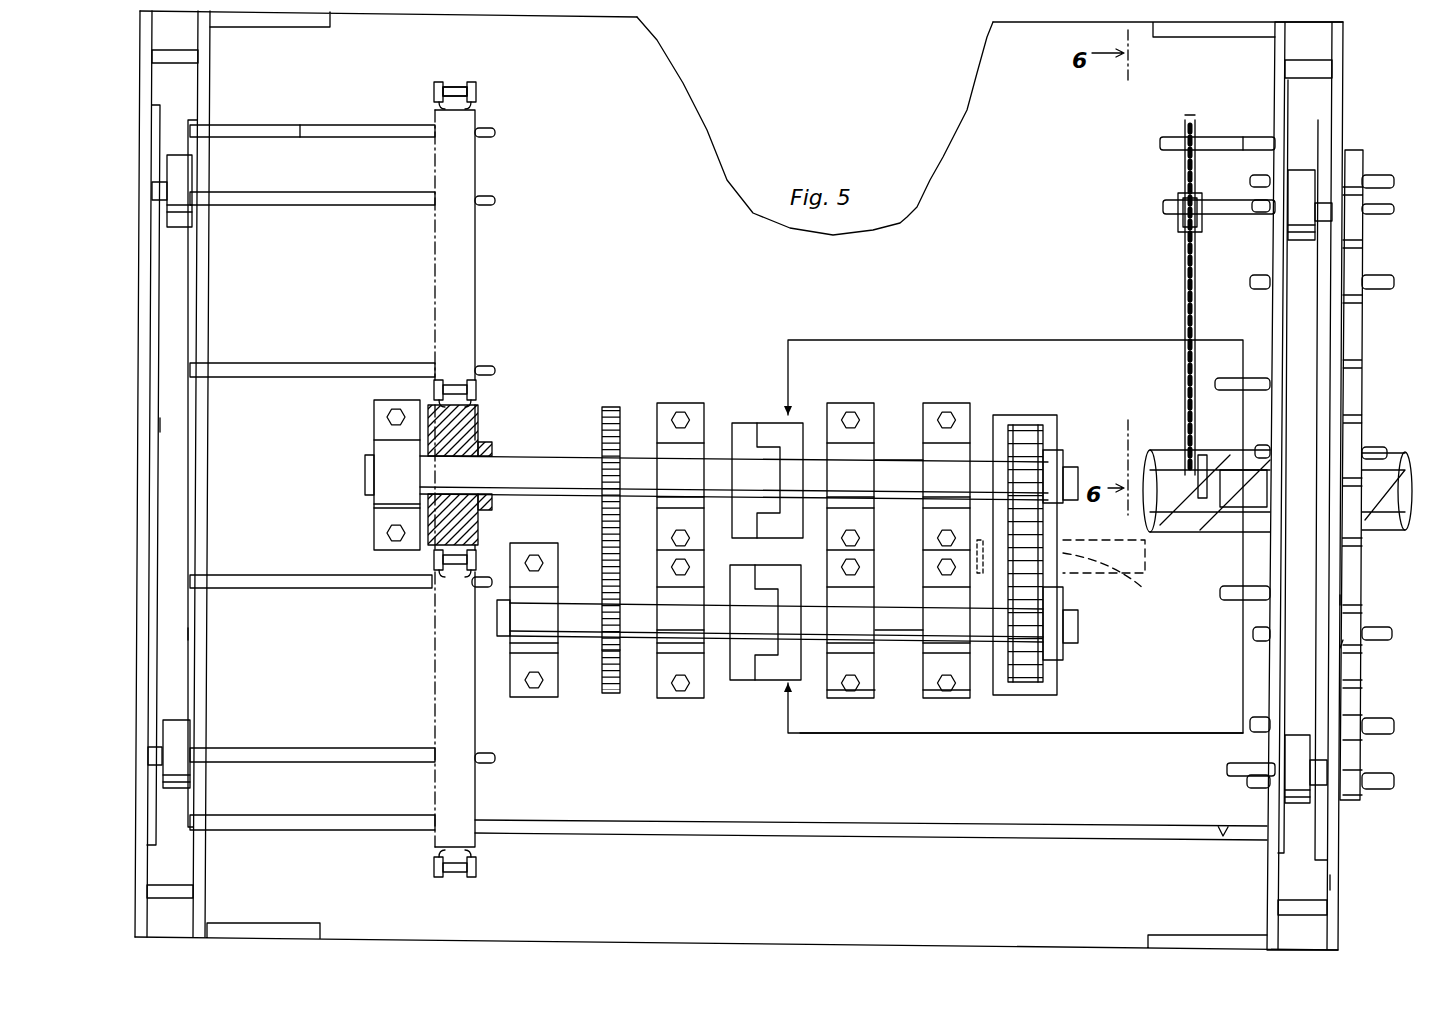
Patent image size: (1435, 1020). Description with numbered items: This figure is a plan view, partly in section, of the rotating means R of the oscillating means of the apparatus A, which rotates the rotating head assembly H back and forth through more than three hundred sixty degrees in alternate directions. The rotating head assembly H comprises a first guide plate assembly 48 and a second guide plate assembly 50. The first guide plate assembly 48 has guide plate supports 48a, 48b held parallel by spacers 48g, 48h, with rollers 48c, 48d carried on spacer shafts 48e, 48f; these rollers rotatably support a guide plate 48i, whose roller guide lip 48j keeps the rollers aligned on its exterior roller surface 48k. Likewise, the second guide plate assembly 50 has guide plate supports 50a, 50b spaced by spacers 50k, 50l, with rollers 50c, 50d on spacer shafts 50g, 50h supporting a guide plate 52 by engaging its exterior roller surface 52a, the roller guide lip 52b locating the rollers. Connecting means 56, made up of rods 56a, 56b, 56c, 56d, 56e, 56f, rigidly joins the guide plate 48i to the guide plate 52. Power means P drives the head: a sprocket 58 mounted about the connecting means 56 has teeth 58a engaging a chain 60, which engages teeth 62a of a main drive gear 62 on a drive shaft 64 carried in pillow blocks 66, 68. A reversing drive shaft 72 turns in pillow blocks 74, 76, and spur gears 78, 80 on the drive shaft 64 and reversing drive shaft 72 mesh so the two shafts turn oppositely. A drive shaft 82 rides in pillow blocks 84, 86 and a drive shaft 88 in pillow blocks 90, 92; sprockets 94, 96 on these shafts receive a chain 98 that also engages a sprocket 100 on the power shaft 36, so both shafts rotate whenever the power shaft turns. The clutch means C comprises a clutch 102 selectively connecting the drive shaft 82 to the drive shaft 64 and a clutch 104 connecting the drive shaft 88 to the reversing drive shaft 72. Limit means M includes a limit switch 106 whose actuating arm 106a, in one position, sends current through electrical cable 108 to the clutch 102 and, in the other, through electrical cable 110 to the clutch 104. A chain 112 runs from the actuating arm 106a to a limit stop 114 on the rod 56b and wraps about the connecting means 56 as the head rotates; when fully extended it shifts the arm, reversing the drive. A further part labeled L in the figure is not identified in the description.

The power shaft 36 is at (1148, 550).
The first guide plate assembly 48 is at (221, 256).
The guide plate support 48a is at (203, 302).
The guide plate support 48b is at (142, 328).
The head guide roller 48c is at (176, 724).
The head guide roller 48d is at (185, 170).
The spacer shaft 48e is at (152, 755).
The spacer shaft 48f is at (156, 190).
The spacer 48g is at (160, 888).
The spacer 48h is at (160, 57).
The guide plate 48i is at (182, 639).
The roller guide lip 48j is at (153, 288).
The exterior roller surface 48k is at (175, 432).
The second guide plate assembly 50 is at (1353, 863).
The guide plate support 50a is at (1270, 870).
The guide plate support 50b is at (1335, 884).
The head guide roller 50c is at (1290, 750).
The head guide roller 50d is at (1303, 178).
The spacer shaft 50g is at (1320, 770).
The spacer shaft 50h is at (1320, 218).
The spacer 50k is at (1290, 905).
The spacer 50l is at (1290, 70).
The guide plate 52 is at (1319, 631).
The exterior roller surface 52a is at (1300, 645).
The roller guide lip 52b is at (1318, 600).
The connecting means 56 is at (337, 114).
The rod 56a is at (306, 125).
The rod 56b is at (336, 192).
The rod 56c is at (310, 363).
The rod 56d is at (283, 575).
The rod 56e is at (305, 748).
The rod 56f is at (296, 815).
The sprocket 58 is at (478, 114).
The teeth 58a is at (458, 86).
The chain 60 is at (477, 252).
The main drive gear 62 is at (476, 420).
The teeth 62a is at (467, 382).
The drive shaft 64 is at (533, 456).
The pillow block 66 is at (385, 456).
The pillow block 68 is at (665, 456).
The reversing drive shaft 72 is at (580, 640).
The pillow block 74 is at (523, 638).
The pillow block 76 is at (662, 642).
The spur gear 78 is at (612, 407).
The spur gear 80 is at (610, 697).
The drive shaft 82 is at (890, 462).
The pillow block 84 is at (838, 408).
The pillow block 86 is at (962, 408).
The drive shaft 88 is at (898, 652).
The pillow block 90 is at (833, 693).
The pillow block 92 is at (945, 700).
The sprocket 94 is at (1070, 450).
The sprocket 96 is at (1063, 600).
The chain 98 is at (1048, 538).
The sprocket 100 is at (1143, 589).
The clutch 102 is at (767, 409).
The clutch 104 is at (775, 677).
The limit switch 106 is at (1240, 472).
The actuating arm 106a is at (1203, 455).
The electrical cable 108 is at (1016, 340).
The electrical cable 110 is at (987, 734).
The chain 112 is at (1183, 283).
The limit stop 114 is at (1178, 228).
The apparatus A is at (637, 257).
The clutch means C is at (724, 702).
The rotating head assembly H is at (1356, 82).
The roller L is at (1402, 434).
The limit means M is at (1170, 263).
The power means P is at (1157, 622).
The rotating means R is at (912, 321).